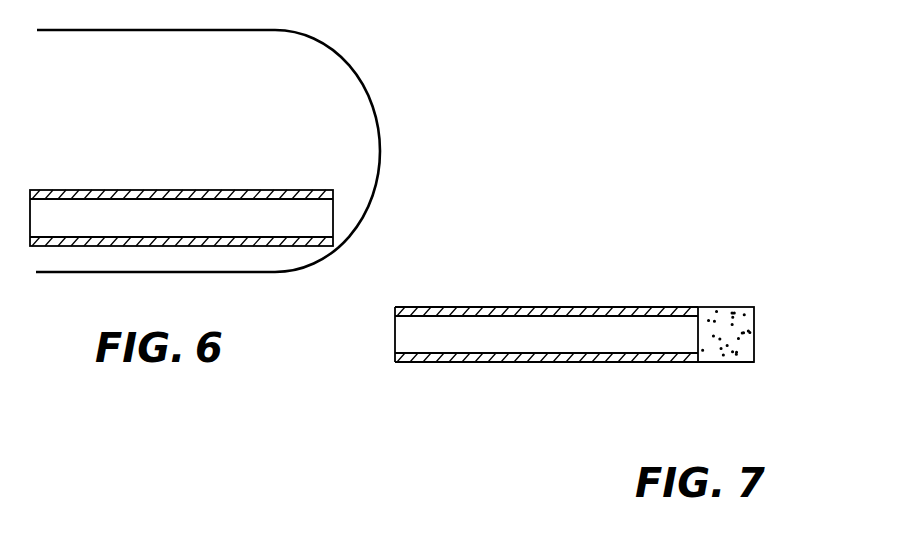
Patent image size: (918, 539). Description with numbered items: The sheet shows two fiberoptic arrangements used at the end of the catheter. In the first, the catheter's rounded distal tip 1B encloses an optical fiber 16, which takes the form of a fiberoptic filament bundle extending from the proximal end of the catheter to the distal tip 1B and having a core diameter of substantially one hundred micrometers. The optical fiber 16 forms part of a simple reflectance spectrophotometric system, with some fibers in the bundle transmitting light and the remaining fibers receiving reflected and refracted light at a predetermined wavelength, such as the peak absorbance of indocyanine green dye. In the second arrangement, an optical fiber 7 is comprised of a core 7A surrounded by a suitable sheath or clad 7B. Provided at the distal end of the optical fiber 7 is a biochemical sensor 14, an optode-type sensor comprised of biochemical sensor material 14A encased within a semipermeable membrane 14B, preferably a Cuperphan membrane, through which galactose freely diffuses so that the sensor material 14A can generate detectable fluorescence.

In FIG. 6, the distal tip 1B is at (370, 81).
In FIG. 6, the optical fiber 16 is at (114, 184).
In FIG. 7, the optical fiber 7 is at (546, 333).
In FIG. 7, the core 7A is at (515, 346).
In FIG. 7, the clad 7B is at (571, 364).
In FIG. 7, the biochemical sensor 14 is at (784, 328).
In FIG. 7, the biochemical sensor material 14A is at (734, 318).
In FIG. 7, the semipermeable membrane 14B is at (721, 364).